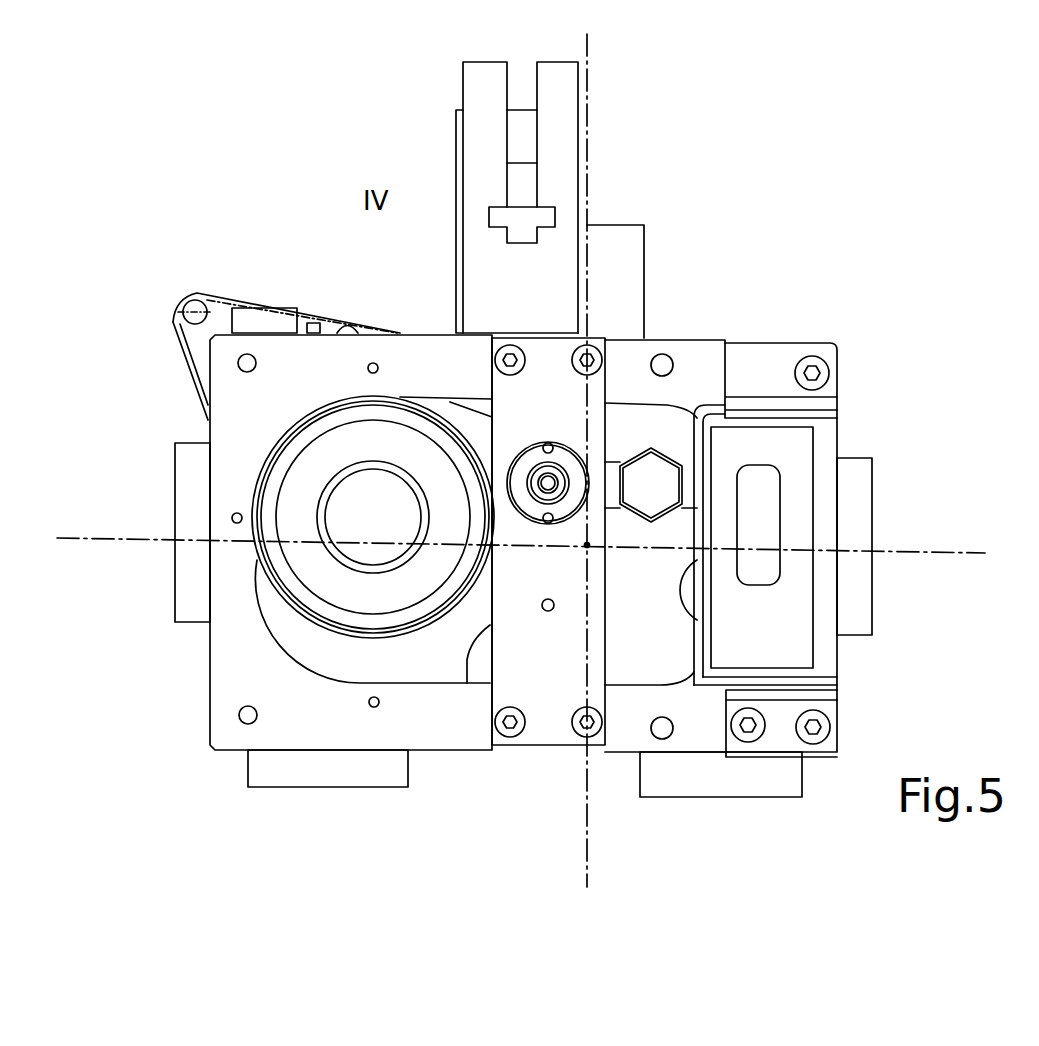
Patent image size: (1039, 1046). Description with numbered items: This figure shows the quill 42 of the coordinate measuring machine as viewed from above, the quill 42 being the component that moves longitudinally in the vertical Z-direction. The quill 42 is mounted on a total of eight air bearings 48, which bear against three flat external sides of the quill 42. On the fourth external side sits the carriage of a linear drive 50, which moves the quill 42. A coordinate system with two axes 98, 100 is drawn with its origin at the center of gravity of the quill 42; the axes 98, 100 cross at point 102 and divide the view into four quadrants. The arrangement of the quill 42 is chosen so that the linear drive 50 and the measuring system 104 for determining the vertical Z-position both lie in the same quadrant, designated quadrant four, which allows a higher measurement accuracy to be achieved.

The quill 42 is at (708, 337).
The air bearings 48 is at (183, 563).
The linear drive 50 is at (482, 147).
The axis 98 is at (915, 552).
The axis 100 is at (587, 73).
The axis intersection point 102 is at (587, 545).
The measuring system for determination of the vertical Z-position 104 is at (268, 323).